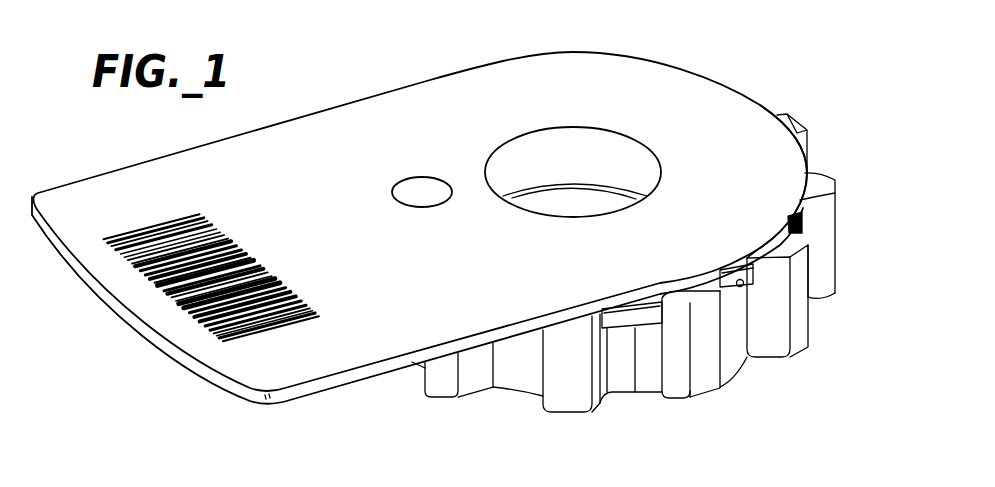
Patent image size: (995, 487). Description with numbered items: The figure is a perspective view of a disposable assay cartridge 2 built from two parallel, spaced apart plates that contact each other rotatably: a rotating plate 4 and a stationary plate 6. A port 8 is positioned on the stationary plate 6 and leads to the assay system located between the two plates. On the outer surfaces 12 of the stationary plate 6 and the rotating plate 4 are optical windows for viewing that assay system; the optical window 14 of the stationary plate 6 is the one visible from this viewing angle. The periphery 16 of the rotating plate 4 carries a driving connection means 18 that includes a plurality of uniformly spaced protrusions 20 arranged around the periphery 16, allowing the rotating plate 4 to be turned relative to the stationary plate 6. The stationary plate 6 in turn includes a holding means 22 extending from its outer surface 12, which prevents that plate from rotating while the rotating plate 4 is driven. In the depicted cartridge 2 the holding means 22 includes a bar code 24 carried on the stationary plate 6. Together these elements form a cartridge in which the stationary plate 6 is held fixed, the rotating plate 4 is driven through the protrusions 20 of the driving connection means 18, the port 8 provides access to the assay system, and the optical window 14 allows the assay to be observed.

The disposable assay cartridge 2 is at (778, 45).
The rotating plate 4 is at (810, 268).
The stationary plate 6 is at (692, 64).
The port 8 is at (412, 185).
The outer surface 12 is at (765, 143).
The optical window 14 is at (607, 142).
The periphery 16 is at (722, 382).
The driving connection means 18 is at (637, 315).
The protrusions 20 is at (448, 400).
The holding means 22 is at (313, 137).
The bar code 24 is at (185, 213).